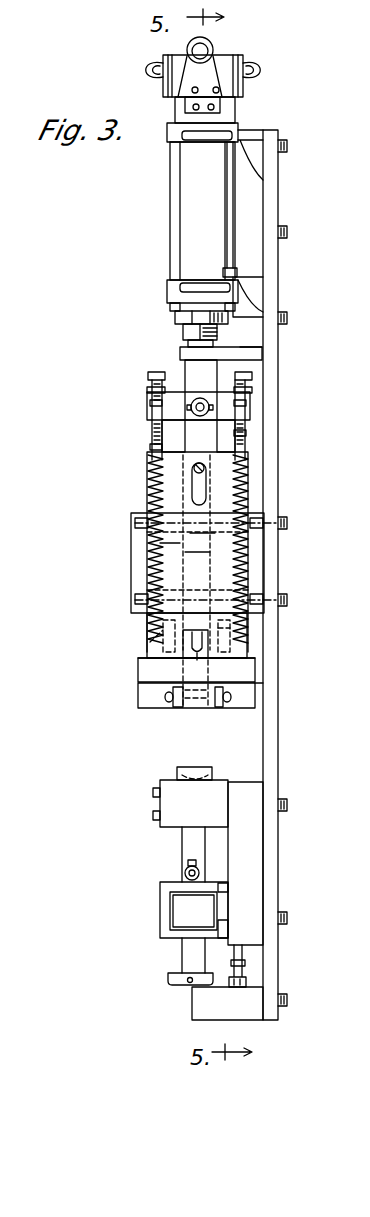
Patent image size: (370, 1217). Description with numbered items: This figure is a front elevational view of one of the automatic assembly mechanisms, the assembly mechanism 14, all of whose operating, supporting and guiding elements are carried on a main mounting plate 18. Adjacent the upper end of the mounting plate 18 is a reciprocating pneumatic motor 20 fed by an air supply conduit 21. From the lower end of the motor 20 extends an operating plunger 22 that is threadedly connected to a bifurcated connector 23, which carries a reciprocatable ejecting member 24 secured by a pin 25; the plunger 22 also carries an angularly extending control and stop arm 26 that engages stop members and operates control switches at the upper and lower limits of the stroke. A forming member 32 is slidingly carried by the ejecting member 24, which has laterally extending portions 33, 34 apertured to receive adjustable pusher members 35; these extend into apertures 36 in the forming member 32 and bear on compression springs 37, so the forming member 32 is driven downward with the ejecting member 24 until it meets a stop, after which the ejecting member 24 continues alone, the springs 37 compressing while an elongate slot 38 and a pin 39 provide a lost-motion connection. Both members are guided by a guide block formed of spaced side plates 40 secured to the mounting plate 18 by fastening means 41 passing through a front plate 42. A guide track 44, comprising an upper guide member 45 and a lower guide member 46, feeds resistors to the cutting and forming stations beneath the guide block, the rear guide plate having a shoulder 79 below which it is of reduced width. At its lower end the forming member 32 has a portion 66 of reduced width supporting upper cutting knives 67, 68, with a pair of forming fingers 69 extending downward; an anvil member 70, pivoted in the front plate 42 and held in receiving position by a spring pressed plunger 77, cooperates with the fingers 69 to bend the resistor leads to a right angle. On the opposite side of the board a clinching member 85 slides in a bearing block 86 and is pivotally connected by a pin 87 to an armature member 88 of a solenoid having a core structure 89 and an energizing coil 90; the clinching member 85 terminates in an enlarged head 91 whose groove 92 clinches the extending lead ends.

The assembly mechanism 14 is at (142, 283).
The main mounting plate 18 is at (272, 445).
The reciprocating pneumatic motor 20 is at (186, 188).
The air supply conduit 21 is at (197, 66).
The operating plunger 22 is at (188, 345).
The bifurcated connector 23 is at (183, 368).
The ejecting member 24 is at (190, 432).
The pin 25 is at (192, 411).
The control and stop arm 26 is at (250, 353).
The forming member 32 is at (170, 465).
The laterally extending portion 33 is at (247, 398).
The laterally extending portion 34 is at (150, 398).
The adjustable pusher member 35 is at (152, 447).
The aperture 36 is at (150, 492).
The compression spring 37 is at (150, 562).
The elongate slot 38 is at (205, 461).
The pin 39 is at (196, 472).
The side plate 40 is at (258, 551).
The fastening means 41 is at (291, 527).
The front plate 42 is at (232, 628).
The guide track 44 is at (247, 688).
The upper guide member 45 is at (140, 681).
The lower guide member 46 is at (140, 698).
The portion of reduced width 66 is at (150, 642).
The upper cutting knife 67 is at (142, 668).
The upper cutting knife 68 is at (232, 642).
The forming finger 69 is at (218, 676).
The anvil member 70 is at (187, 692).
The spring pressed plunger 77 is at (195, 657).
The shoulder 79 is at (160, 625).
The clinching member 85 is at (187, 848).
The bearing block 86 is at (215, 787).
The pin 87 is at (188, 874).
The armature member 88 is at (188, 959).
The core structure 89 is at (165, 890).
The energizing coil 90 is at (182, 918).
The enlarged head 91 is at (177, 772).
The groove 92 is at (196, 771).